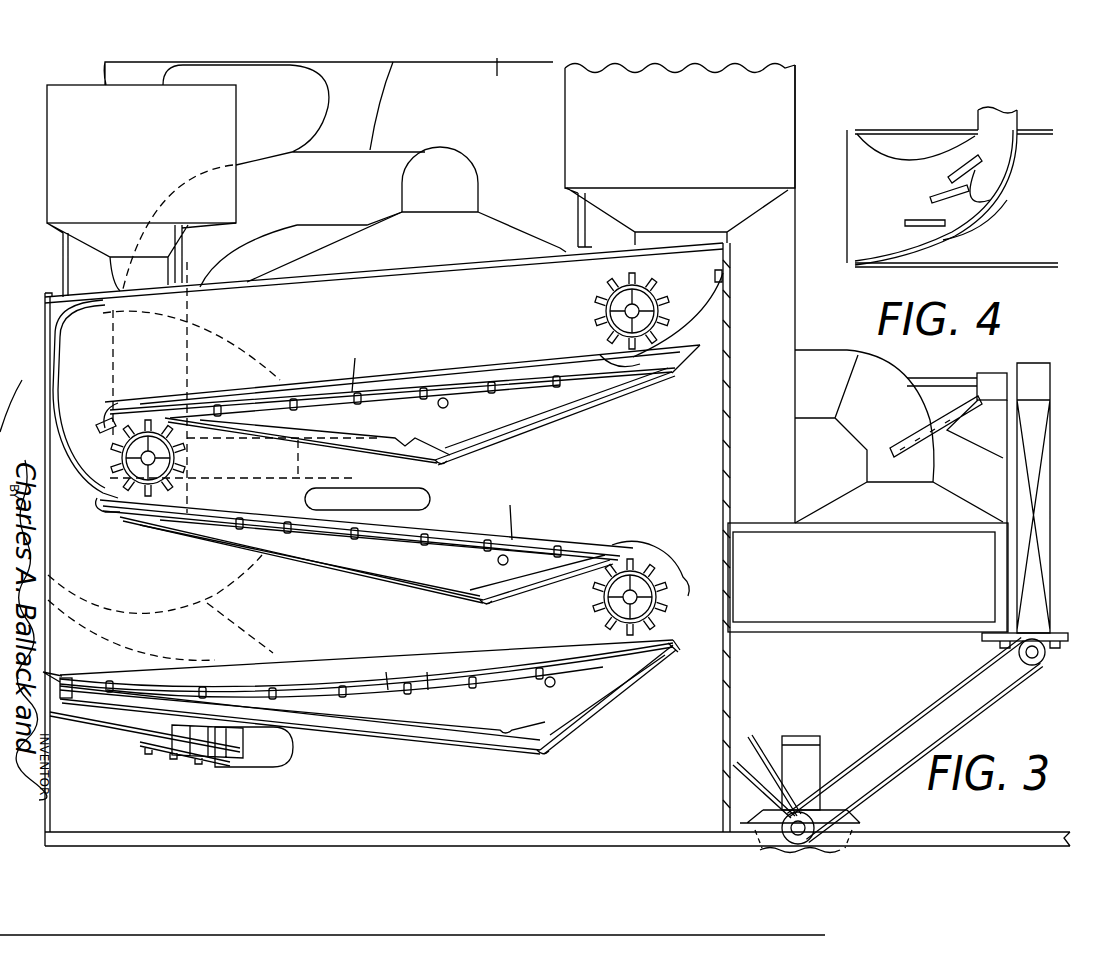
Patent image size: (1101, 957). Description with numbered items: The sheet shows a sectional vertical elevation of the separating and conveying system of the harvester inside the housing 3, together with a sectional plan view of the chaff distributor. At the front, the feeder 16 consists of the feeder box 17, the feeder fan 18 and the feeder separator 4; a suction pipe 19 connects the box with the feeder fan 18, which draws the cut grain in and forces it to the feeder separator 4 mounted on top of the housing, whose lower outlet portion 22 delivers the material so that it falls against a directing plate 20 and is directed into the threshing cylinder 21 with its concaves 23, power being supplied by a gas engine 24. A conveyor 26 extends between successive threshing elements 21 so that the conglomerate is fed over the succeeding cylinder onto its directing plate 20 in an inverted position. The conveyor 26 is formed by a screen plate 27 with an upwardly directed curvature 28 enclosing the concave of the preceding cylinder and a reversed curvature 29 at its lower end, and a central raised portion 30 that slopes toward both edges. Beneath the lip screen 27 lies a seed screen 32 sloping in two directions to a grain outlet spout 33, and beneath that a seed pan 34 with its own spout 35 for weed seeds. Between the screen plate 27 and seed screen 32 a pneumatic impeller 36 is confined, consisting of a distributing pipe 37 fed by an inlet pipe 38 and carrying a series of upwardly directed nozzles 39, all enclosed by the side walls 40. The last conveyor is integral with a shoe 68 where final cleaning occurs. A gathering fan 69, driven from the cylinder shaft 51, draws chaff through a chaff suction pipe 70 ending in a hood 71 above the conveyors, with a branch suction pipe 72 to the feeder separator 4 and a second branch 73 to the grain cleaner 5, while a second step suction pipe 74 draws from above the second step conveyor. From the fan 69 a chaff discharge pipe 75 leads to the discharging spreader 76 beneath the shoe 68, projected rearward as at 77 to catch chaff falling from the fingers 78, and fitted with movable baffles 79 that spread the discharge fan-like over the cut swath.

In FIG. 3, the housing 3 is at (730, 700).
In FIG. 3, the feeder separator 4 is at (680, 126).
In FIG. 3, the grain cleaner 5 is at (141, 191).
In FIG. 3, the feeder 16 is at (796, 387).
In FIG. 3, the feeder box 17 is at (898, 514).
In FIG. 3, the feeder fan 18 is at (742, 537).
In FIG. 3, the suction pipe 19 is at (931, 415).
In FIG. 3, the directing plate 20 is at (712, 300).
In FIG. 3, the threshing element or cylinder 21 is at (600, 300).
In FIG. 3, the hopper spout 22 is at (676, 217).
In FIG. 3, the concave 23 is at (661, 320).
In FIG. 3, the gas engine 24 is at (810, 770).
In FIG. 3, the conveyor 26 is at (292, 385).
In FIG. 3, the screen plate 27 is at (418, 385).
In FIG. 3, the upwardly directed curvature 28 is at (86, 530).
In FIG. 3, the reversed curvature 29 is at (115, 410).
In FIG. 3, the raised portion 30 is at (583, 360).
In FIG. 3, the seed screen 32 is at (590, 398).
In FIG. 3, the grain outlet spout 33 is at (302, 575).
In FIG. 3, the seed pan 34 is at (557, 570).
In FIG. 3, the spout 35 is at (538, 772).
In FIG. 3, the pneumatic impeller 36 is at (364, 561).
In FIG. 3, the distributing pipe 37 is at (333, 537).
In FIG. 3, the inlet pipe 38 is at (445, 410).
In FIG. 3, the nozzles 39 is at (435, 516).
In FIG. 3, the side walls 40 is at (355, 510).
In FIG. 3, the cylinder shaft 51 is at (176, 458).
In FIG. 3, the shoe 68 is at (92, 684).
In FIG. 3, the gathering fan 69 is at (14, 406).
In FIG. 3, the chaff suction pipe 70 is at (294, 174).
In FIG. 3, the hood 71 is at (406, 328).
In FIG. 3, the branch suction pipe 72 is at (507, 73).
In FIG. 3, the second branch 73 is at (328, 73).
In FIG. 3, the second step suction pipe 74 is at (245, 387).
In FIG. 3, the chaff discharge pipe 75 is at (170, 466).
In FIG. 4, the chaff discharge pipe 75 is at (992, 128).
In FIG. 3, the discharging spreader 76 is at (102, 725).
In FIG. 4, the discharging spreader 76 is at (1012, 185).
In FIG. 3, the projection 77 is at (58, 690).
In FIG. 3, the fingers 78 is at (55, 672).
In FIG. 3, the dampers or movable baffles 79 is at (238, 760).
In FIG. 4, the dampers or movable baffles 79 is at (996, 212).